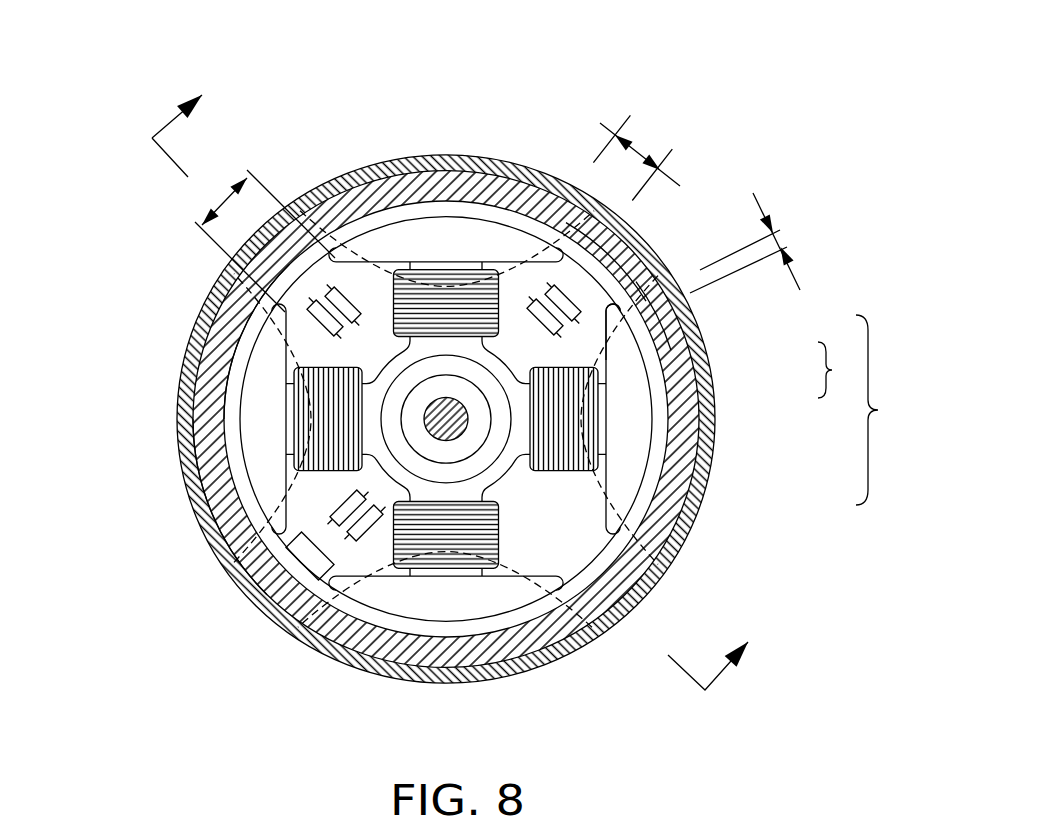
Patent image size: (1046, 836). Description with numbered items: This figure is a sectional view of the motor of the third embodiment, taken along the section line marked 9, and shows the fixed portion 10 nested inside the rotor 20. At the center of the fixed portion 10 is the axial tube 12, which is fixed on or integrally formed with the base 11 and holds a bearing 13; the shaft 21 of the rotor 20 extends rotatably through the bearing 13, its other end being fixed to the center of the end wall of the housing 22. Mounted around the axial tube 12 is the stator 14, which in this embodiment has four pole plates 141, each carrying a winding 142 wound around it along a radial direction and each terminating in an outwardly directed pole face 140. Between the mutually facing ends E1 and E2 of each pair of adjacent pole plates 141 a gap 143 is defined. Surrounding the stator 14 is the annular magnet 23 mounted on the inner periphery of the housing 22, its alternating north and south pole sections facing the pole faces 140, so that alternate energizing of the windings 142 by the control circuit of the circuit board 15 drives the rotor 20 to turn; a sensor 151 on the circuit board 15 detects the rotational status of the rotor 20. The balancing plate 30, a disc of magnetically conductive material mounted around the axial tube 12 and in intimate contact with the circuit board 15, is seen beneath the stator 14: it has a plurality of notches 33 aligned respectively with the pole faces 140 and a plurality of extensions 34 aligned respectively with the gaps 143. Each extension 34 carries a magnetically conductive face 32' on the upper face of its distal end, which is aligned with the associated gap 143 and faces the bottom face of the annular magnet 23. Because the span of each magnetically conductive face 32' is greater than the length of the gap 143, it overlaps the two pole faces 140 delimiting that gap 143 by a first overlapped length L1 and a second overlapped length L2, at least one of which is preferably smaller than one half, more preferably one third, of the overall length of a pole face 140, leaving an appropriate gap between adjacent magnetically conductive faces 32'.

The fixed portion 10 is at (916, 426).
The base 11 is at (645, 472).
The axial tube 12 is at (498, 436).
The bearing 13 is at (483, 410).
The stator 14 is at (549, 419).
The pole plate 141 is at (633, 372).
The winding 142 is at (655, 390).
The circuit board 15 is at (597, 343).
The pole face 140 is at (238, 484).
The sensor 151 is at (247, 580).
The gap 143 is at (212, 189).
The rotor 20 is at (402, 123).
The shaft 21 is at (440, 408).
The housing 22 is at (468, 157).
The annular magnet 23 is at (434, 182).
The balancing plate 30 is at (300, 551).
The magnetically conductive face 32' is at (410, 507).
The notch 33 is at (350, 605).
The extension 34 is at (372, 565).
The section line 9- 9 is at (467, 365).
The first overlapped length L1 is at (754, 243).
The second overlapped length L2 is at (636, 157).
The end of pole plate E1 is at (643, 252).
The end of pole plate E2 is at (628, 240).